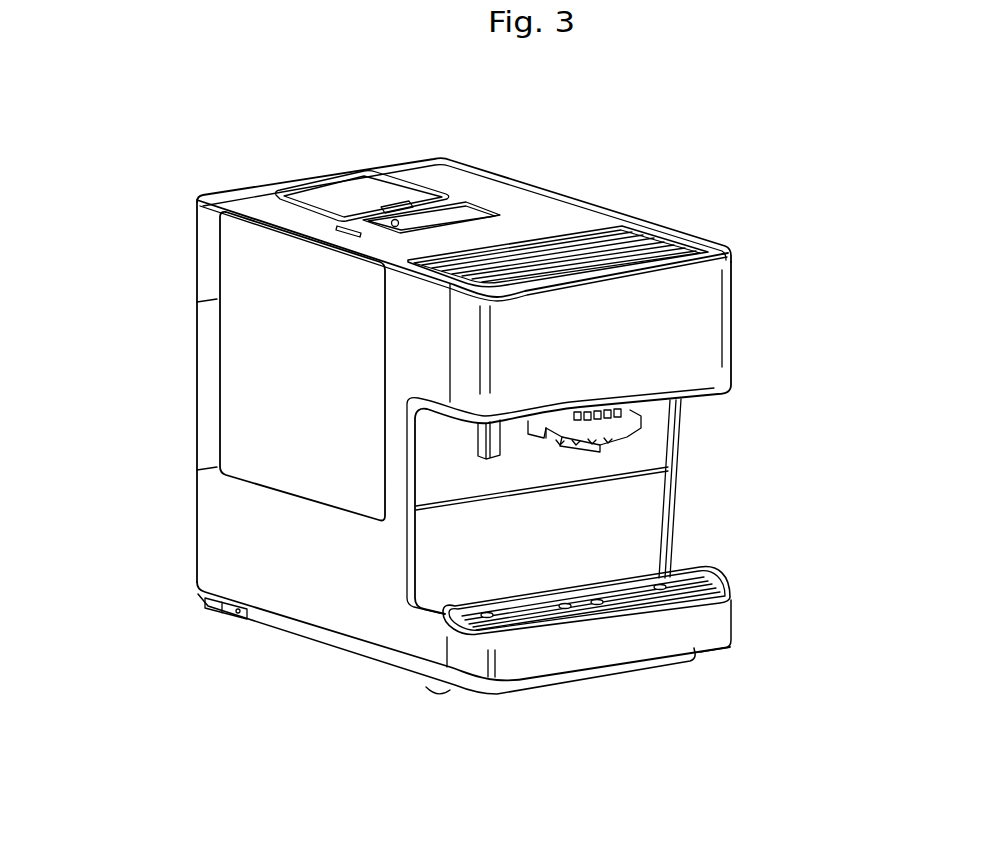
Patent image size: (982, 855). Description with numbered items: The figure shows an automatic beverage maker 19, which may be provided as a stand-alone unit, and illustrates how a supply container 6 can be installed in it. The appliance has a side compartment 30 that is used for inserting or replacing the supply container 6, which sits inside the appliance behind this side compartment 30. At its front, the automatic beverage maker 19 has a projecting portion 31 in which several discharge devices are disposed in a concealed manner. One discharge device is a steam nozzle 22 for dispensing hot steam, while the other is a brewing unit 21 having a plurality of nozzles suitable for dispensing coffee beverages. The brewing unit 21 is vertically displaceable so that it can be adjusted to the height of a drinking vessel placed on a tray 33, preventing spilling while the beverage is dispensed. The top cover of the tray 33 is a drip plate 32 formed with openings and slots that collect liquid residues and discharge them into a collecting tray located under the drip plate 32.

The automatic beverage maker 19 is at (597, 172).
The supply container 6 is at (205, 337).
The side compartment 30 is at (243, 412).
The projecting portion 31 is at (697, 317).
The brewing unit 21 is at (612, 436).
The steam nozzle 22 is at (495, 447).
The drip plate 32 is at (528, 613).
The tray 33 is at (717, 630).